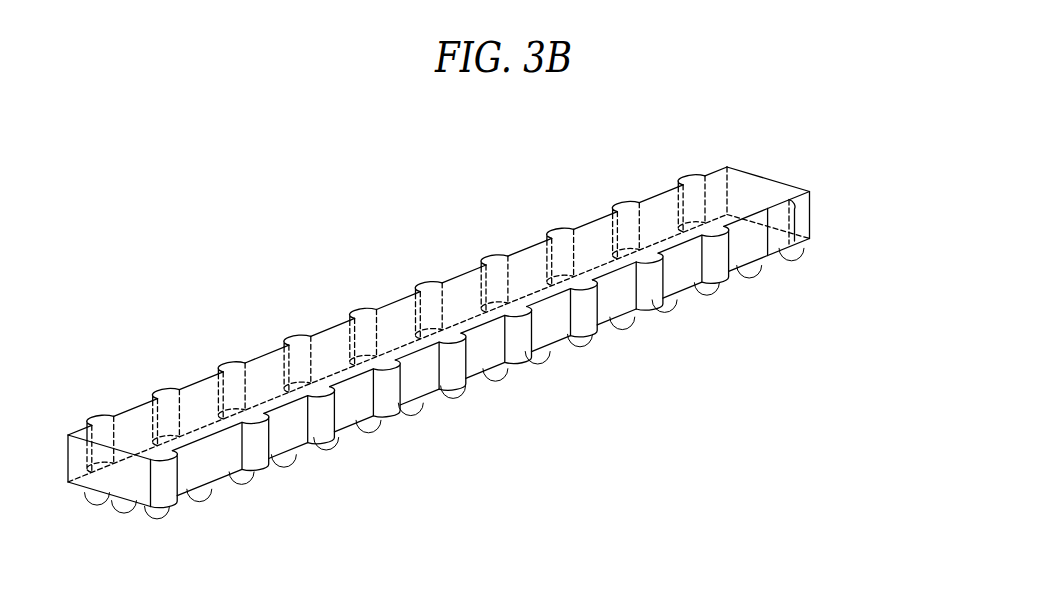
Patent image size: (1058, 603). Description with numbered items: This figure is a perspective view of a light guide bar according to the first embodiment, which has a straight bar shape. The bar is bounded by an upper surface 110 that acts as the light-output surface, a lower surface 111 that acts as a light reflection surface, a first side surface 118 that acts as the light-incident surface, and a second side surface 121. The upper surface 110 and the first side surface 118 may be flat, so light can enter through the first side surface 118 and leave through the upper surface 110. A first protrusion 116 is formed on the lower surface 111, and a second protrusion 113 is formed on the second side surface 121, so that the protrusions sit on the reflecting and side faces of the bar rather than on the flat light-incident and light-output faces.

The upper surface 110 is at (752, 190).
The lower surface 111 is at (690, 266).
The second protrusion 113 is at (781, 244).
The first protrusion 116 is at (705, 293).
The first side surface 118 is at (788, 191).
The second side surface 121 is at (752, 240).